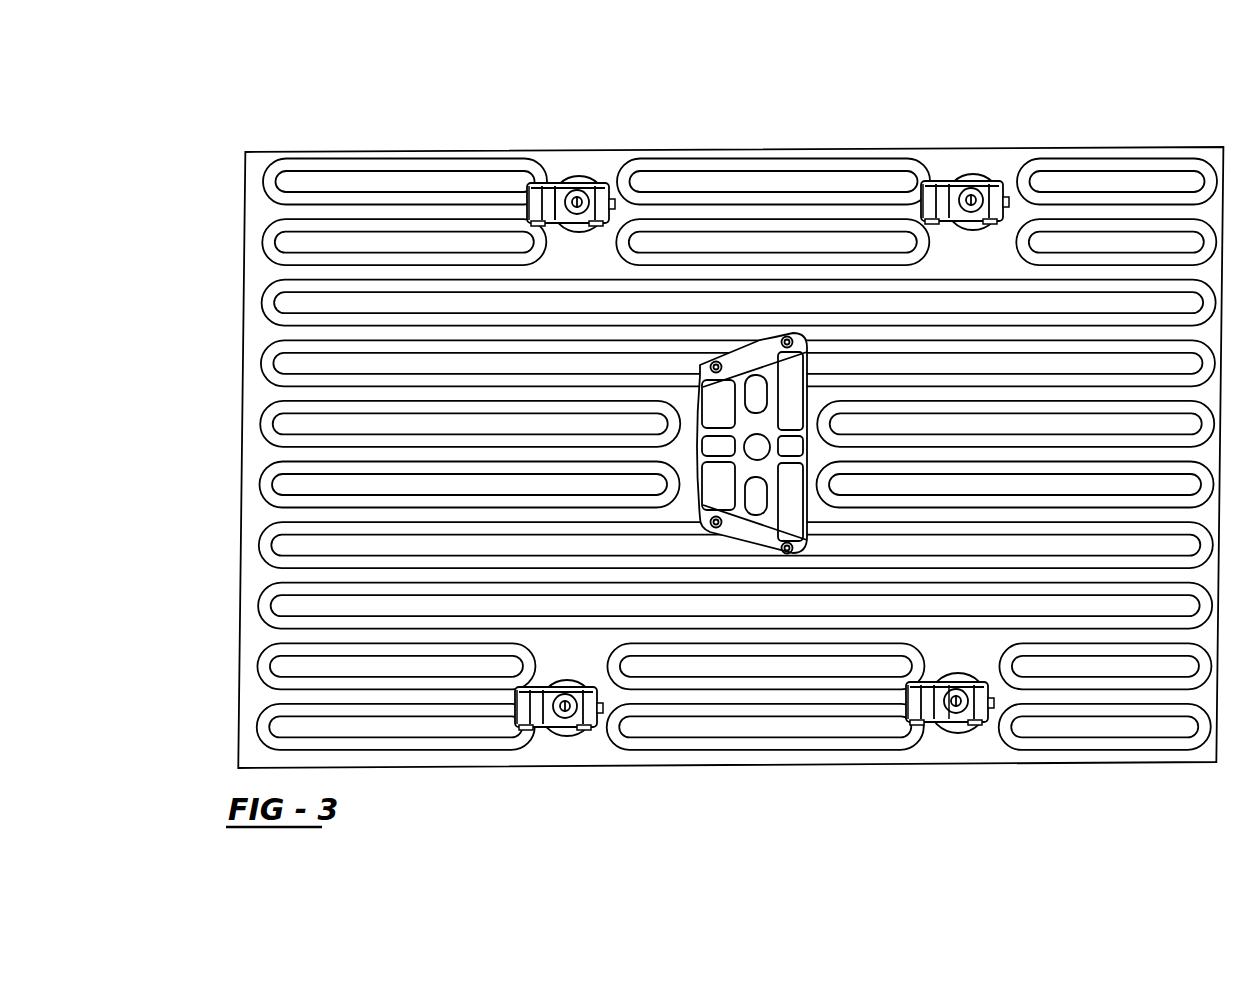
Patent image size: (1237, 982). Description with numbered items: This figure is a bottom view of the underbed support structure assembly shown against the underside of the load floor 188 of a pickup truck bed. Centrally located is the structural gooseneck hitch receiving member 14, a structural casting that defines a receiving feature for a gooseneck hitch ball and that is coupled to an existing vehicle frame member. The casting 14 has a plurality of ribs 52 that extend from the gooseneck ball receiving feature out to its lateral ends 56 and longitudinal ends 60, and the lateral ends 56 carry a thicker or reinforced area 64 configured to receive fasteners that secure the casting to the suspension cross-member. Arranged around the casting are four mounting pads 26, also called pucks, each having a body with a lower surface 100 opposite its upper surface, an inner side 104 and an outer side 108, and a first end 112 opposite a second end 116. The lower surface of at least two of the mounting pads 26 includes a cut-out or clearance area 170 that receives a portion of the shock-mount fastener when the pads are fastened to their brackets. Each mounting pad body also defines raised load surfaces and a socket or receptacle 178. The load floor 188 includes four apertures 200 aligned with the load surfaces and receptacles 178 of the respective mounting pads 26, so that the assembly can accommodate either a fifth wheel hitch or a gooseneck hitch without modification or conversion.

The structural gooseneck hitch receiving member 14 is at (743, 445).
The mounting pads 26 is at (578, 163).
The ribs 52 is at (773, 371).
The lateral ends 56 is at (742, 342).
The longitudinal ends 60 is at (693, 405).
The reinforced area 64 is at (733, 360).
The lower surface 100 is at (527, 170).
The inner side 104 is at (593, 170).
The outer side 108 is at (579, 210).
The first end 112 is at (522, 208).
The second end 116 is at (620, 183).
The clearance area 170 is at (557, 170).
The receptacle 178 is at (575, 227).
The load floor 188 is at (242, 505).
The apertures 200 is at (615, 214).